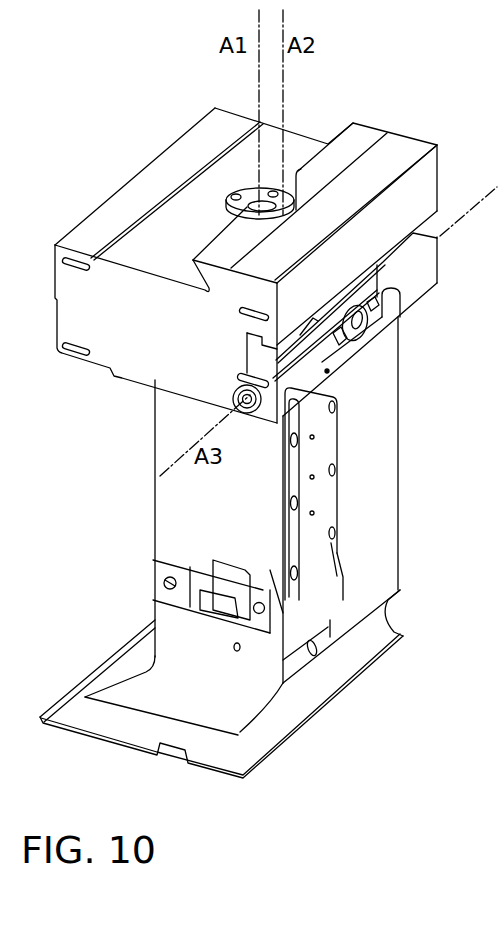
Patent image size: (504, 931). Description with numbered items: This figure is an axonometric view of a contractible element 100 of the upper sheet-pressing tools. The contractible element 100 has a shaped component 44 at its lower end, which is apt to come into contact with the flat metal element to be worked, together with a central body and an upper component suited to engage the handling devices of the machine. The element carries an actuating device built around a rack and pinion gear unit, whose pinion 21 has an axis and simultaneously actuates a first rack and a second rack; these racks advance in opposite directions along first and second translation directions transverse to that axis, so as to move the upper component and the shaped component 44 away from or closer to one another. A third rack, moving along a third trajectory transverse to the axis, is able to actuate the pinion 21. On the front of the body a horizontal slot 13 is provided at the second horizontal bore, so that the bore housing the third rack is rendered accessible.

The contractible element 100 is at (117, 107).
The pinion 21 is at (367, 330).
The horizontal slot 13 is at (329, 372).
The shaped component 44 is at (121, 727).